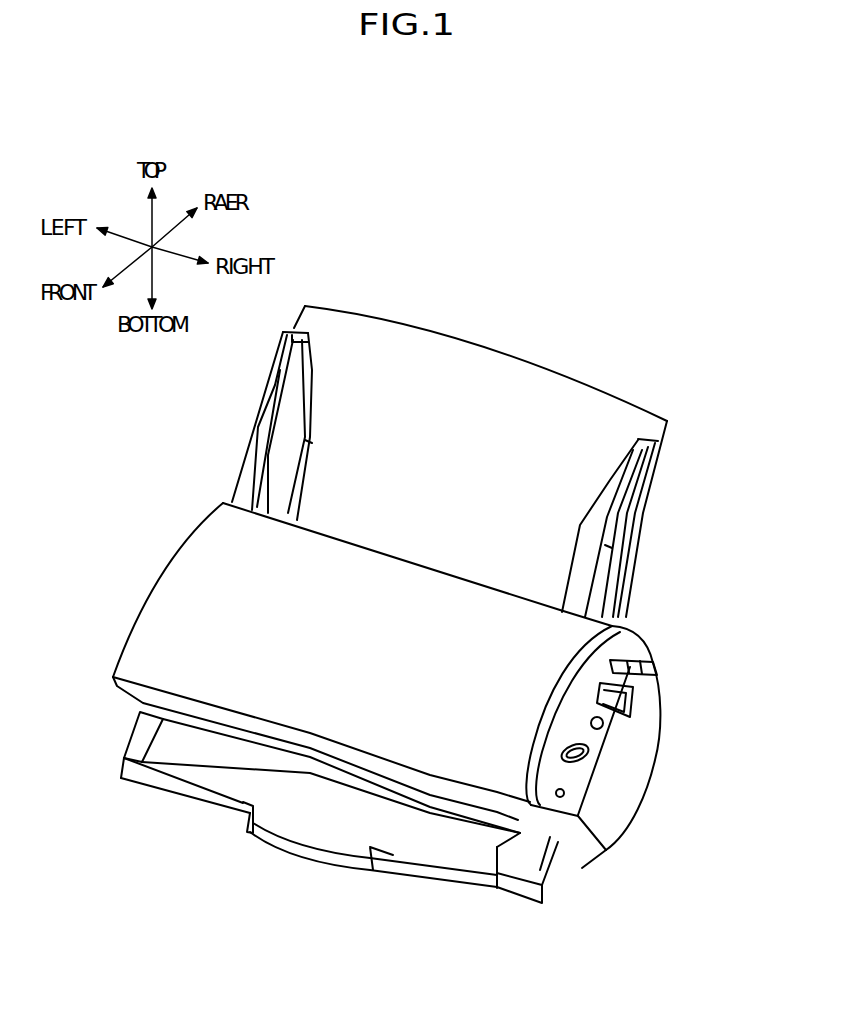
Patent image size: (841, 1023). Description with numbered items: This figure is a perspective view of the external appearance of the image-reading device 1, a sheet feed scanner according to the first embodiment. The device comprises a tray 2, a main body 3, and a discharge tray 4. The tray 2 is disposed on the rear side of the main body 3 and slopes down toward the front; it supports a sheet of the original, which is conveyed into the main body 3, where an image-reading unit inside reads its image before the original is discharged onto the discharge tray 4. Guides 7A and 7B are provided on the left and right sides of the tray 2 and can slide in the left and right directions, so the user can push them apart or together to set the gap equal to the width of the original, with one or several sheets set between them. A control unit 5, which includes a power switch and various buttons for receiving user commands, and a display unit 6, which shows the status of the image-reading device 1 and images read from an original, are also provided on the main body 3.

The image-reading device 1 is at (445, 275).
The tray 2 is at (347, 332).
The main body 3 is at (178, 600).
The discharge tray 4 is at (173, 755).
The control unit 5 is at (580, 735).
The display unit 6 is at (657, 665).
The guide 7A is at (258, 428).
The guide 7B is at (638, 557).